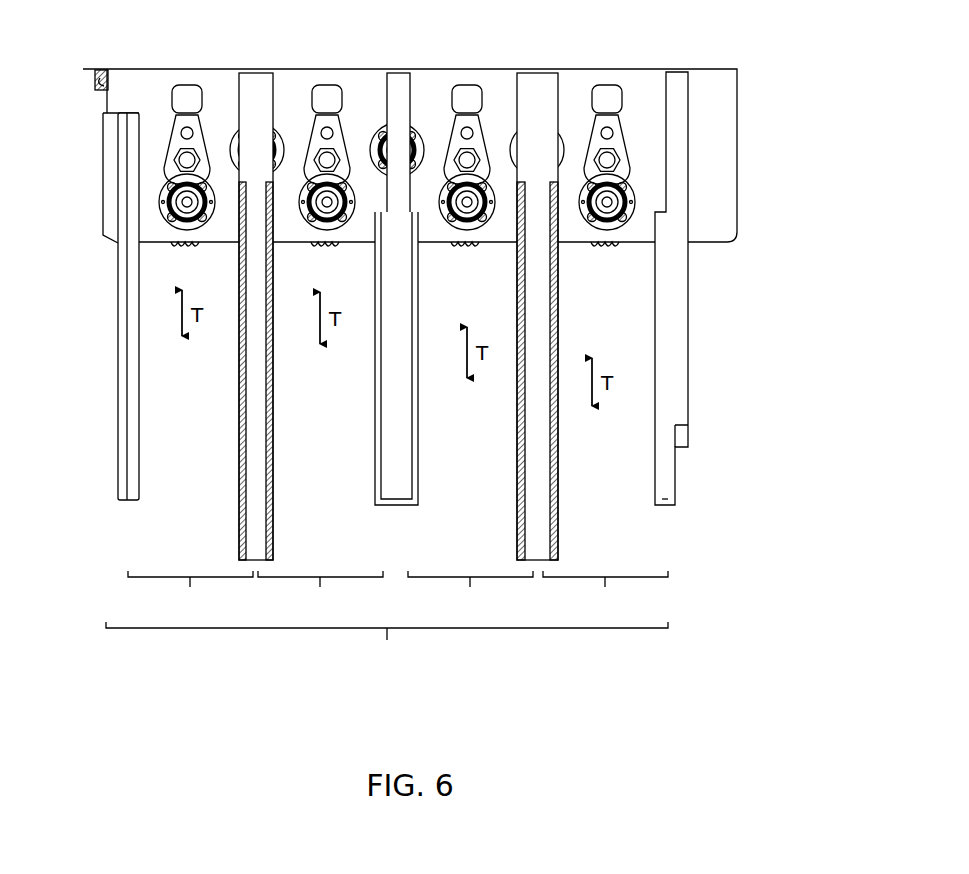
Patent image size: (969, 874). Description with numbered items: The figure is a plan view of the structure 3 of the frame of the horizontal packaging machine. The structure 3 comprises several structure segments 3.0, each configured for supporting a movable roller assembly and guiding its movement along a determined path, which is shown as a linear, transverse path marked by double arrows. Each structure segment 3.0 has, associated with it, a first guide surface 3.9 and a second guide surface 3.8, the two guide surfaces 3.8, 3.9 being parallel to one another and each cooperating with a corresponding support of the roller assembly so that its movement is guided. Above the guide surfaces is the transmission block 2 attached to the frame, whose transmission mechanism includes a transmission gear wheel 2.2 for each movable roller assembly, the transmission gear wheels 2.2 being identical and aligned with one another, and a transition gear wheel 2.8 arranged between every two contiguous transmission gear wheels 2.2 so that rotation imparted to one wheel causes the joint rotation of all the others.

The transmission block 2 is at (722, 128).
The transmission gear wheel 2.2 is at (476, 266).
The transition gear wheel 2.8 is at (515, 150).
The structure of the frame 3 is at (387, 647).
The structure segment 3.0 is at (398, 595).
The second guide surface 3.8 is at (133, 337).
The first guide surface 3.9 is at (252, 383).